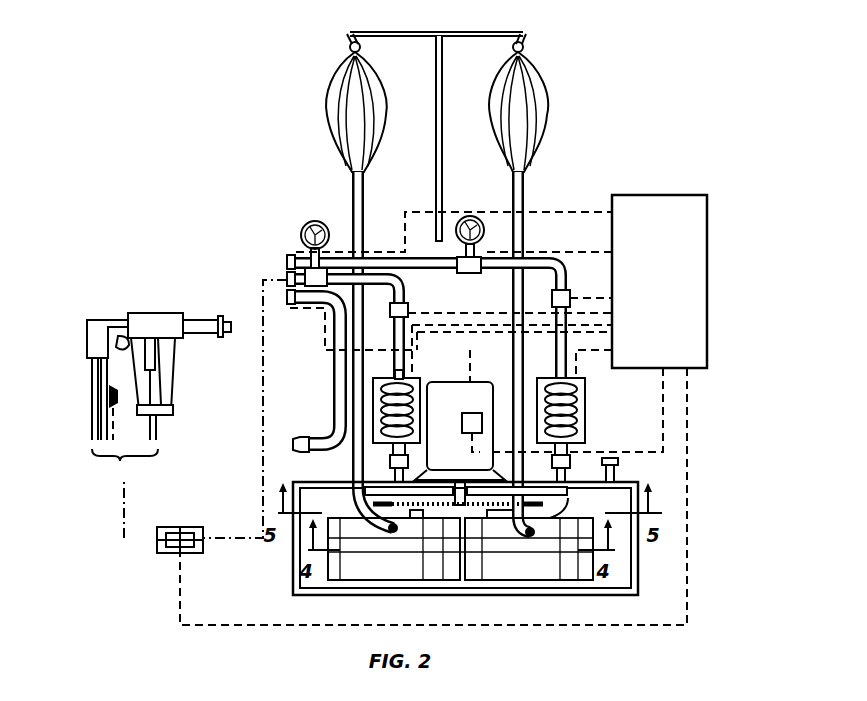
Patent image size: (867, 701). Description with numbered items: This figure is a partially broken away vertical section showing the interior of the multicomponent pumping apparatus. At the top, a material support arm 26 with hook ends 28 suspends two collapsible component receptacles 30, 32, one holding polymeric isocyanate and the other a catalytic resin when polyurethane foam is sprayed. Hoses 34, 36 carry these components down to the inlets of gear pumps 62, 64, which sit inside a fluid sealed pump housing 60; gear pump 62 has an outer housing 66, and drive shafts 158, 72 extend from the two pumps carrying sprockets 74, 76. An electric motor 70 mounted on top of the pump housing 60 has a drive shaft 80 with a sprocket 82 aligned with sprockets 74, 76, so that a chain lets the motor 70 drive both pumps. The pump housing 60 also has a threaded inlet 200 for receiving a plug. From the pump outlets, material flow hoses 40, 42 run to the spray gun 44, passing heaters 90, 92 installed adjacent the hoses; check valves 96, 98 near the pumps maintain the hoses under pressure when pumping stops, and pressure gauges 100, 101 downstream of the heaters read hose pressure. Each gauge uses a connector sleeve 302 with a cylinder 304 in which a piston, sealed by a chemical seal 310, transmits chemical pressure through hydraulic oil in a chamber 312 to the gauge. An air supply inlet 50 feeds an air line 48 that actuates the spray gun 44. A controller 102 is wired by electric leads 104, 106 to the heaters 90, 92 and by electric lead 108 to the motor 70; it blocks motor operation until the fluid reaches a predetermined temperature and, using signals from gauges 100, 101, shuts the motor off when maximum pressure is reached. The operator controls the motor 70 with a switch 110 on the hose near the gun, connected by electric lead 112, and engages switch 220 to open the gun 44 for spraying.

The material support arm 26 is at (452, 33).
The hook ends 28 is at (350, 42).
The collapsible component receptacle 30 is at (331, 93).
The collapsible component receptacle 32 is at (538, 93).
The hose 34 is at (366, 190).
The hose 36 is at (525, 190).
The material flow hose 40 is at (401, 320).
The material flow hose 42 is at (556, 345).
The spray gun 44 is at (165, 313).
The air line 48 is at (331, 369).
The air supply inlet 50 is at (305, 437).
The pump housing 60 is at (636, 568).
The gear pump 62 is at (355, 572).
The gear pump 64 is at (572, 570).
The outer housing 66 is at (318, 577).
The electric motor 70 is at (456, 411).
The drive shaft 72 is at (503, 527).
The sprocket 74 is at (363, 498).
The sprocket 76 is at (567, 510).
The drive shaft 80 is at (470, 455).
The sprocket 82 is at (473, 517).
The heater 90 is at (373, 427).
The heater 92 is at (586, 410).
The check valve 96 is at (394, 462).
The check valve 98 is at (556, 465).
The pressure gauge 100 is at (314, 220).
The pressure gauge 101 is at (470, 215).
The controller 102 is at (660, 194).
The electric lead 104 is at (608, 314).
The electric lead 106 is at (608, 350).
The electric lead 108 is at (690, 440).
The switch 110 is at (117, 408).
The electric lead 112 is at (468, 351).
The drive shaft 158 is at (422, 514).
The threaded inlet 200 is at (611, 457).
The switch 220 is at (122, 336).
The connector sleeve 302 is at (180, 588).
The cylinder 304 is at (180, 527).
The chemical seal 310 is at (590, 352).
The chamber 312 is at (493, 334).